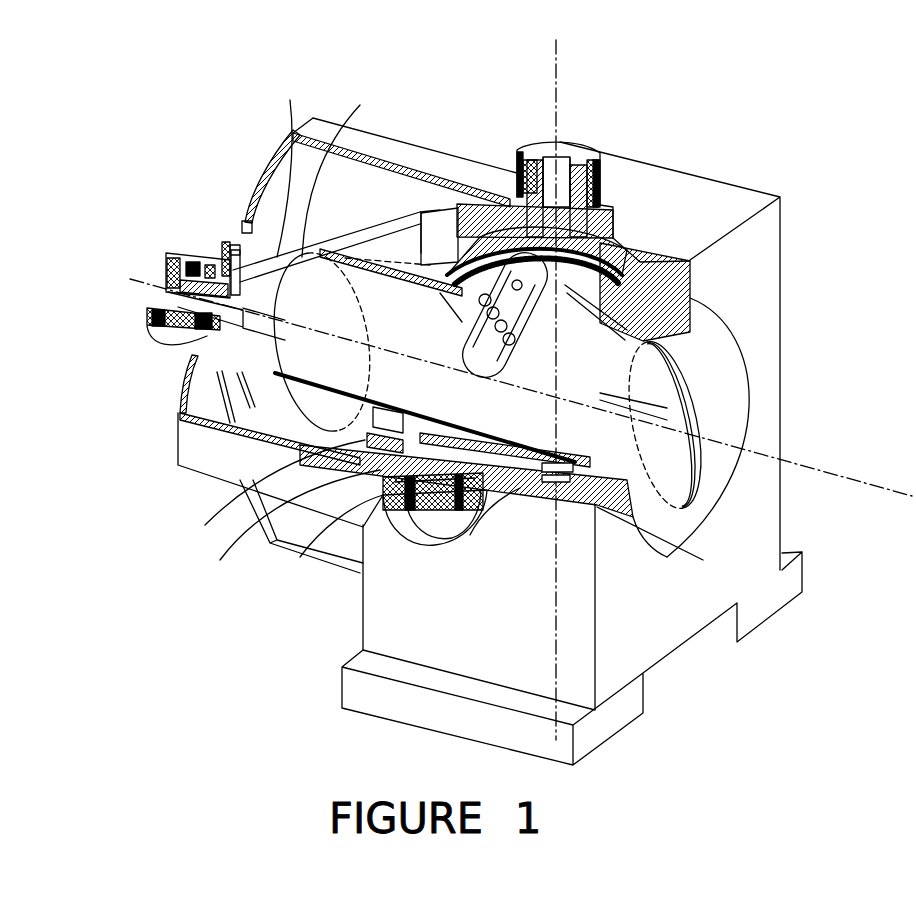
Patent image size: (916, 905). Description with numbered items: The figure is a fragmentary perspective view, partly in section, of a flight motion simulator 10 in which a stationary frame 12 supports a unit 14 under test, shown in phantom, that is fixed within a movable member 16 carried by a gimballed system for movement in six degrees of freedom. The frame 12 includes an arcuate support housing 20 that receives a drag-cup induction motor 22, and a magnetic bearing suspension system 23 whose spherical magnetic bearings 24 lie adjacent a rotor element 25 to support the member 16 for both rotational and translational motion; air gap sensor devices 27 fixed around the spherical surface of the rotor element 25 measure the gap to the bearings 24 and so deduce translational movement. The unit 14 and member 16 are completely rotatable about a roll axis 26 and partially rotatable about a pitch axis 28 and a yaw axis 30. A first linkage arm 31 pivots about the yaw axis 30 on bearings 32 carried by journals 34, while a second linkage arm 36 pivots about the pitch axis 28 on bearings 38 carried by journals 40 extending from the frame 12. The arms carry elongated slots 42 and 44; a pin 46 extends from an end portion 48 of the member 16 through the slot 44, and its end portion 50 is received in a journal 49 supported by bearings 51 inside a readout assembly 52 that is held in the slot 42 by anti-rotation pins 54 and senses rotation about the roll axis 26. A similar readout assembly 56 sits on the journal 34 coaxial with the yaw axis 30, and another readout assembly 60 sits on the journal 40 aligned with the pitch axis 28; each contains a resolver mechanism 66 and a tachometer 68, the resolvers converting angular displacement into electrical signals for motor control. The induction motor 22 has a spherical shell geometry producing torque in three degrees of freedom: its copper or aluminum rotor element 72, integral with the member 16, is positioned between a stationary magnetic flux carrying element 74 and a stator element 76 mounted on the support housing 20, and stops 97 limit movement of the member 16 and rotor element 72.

The flight motion simulator 10 is at (140, 200).
The stationary frame 12 is at (764, 277).
The unit under test 14 is at (630, 358).
The movable member 16 is at (375, 410).
The support housing 20 is at (612, 208).
The drag-cup induction motor 22 is at (438, 242).
The magnetic bearing suspension system 23 is at (690, 421).
The spherical magnetic bearings 24 is at (526, 333).
The rotor element 25 is at (645, 305).
The roll axis 26 is at (829, 472).
The air gap sensor devices 27 is at (667, 431).
The pitch axis 28 is at (366, 540).
The yaw axis 30 is at (560, 52).
The first linkage arm 31 is at (263, 178).
The bearings 32 is at (650, 200).
The journals 34 is at (567, 140).
The second linkage arm 36 is at (200, 460).
The bearings 38 is at (474, 516).
The journals 40 is at (418, 506).
The elongated slot 42 is at (244, 232).
The elongated slot 44 is at (270, 330).
The pin 46 is at (267, 330).
The end portion 48 is at (312, 190).
The journal 49 is at (167, 290).
The end portion 50 is at (162, 278).
The bearings 51 is at (212, 270).
The readout assembly 52 is at (178, 249).
The anti-rotation pins 54 is at (293, 127).
The readout assembly 56 is at (513, 130).
The readout assembly 60 is at (468, 543).
The resolver mechanism 66 is at (605, 178).
The tachometer 68 is at (516, 173).
The rotor element 72 is at (430, 283).
The stationary magnetic flux carrying element 74 is at (472, 288).
The stator element 76 is at (487, 327).
The stops 97 is at (440, 245).